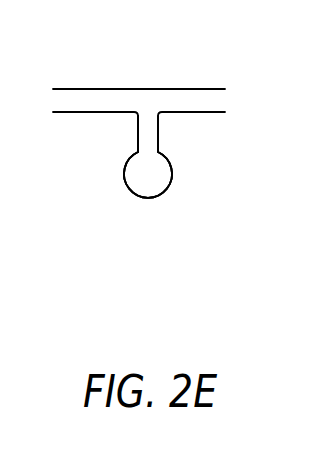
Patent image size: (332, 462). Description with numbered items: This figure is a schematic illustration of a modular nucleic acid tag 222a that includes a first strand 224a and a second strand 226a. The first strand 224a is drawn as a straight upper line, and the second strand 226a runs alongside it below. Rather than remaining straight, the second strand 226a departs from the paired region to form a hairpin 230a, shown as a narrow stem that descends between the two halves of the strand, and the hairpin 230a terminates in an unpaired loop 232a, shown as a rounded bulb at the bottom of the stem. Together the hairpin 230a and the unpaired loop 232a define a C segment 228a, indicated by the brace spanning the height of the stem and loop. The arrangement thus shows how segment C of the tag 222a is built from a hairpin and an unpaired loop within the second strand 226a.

The tag 222a is at (176, 160).
The first strand 224a is at (200, 89).
The second strand 226a is at (205, 112).
The C segment 228a is at (182, 157).
The hairpin 230a is at (138, 131).
The unpaired loop 232a is at (135, 191).